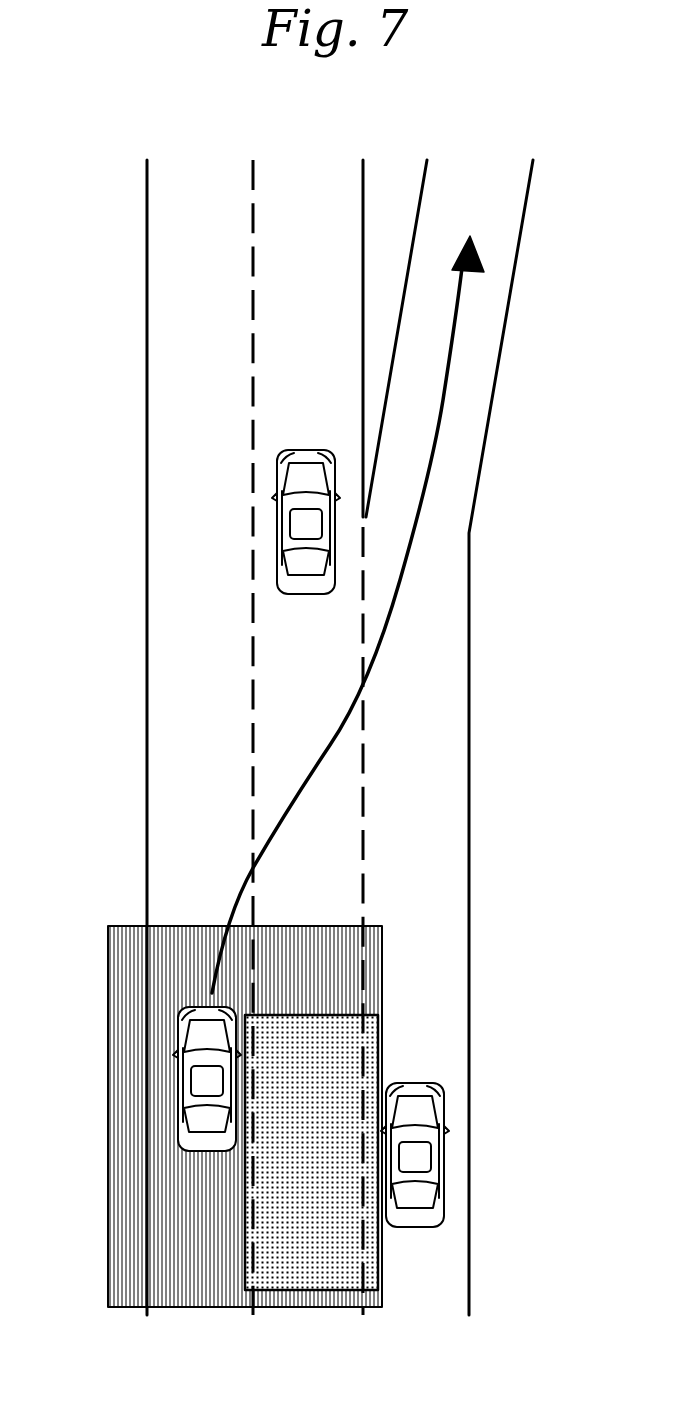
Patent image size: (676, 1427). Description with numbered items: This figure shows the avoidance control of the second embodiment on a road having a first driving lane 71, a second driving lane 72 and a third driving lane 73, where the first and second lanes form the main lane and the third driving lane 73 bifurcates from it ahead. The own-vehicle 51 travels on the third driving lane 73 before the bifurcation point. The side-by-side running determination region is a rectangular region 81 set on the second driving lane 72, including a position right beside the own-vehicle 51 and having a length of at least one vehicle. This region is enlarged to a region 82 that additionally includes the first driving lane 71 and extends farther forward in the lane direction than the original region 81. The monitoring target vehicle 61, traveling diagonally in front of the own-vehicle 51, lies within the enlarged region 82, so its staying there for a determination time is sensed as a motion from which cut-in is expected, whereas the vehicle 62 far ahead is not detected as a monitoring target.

The own-vehicle 51 is at (445, 1168).
The monitoring target vehicle 61 is at (178, 1060).
The vehicle 62 is at (276, 502).
The first driving lane 71 is at (208, 180).
The second driving lane 72 is at (313, 178).
The third driving lane 73 is at (477, 175).
The side-by-side running determination region 81 is at (243, 1196).
The enlarged side-by-side running determination region 82 is at (108, 1133).